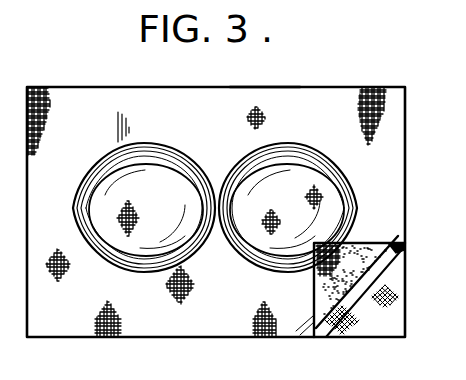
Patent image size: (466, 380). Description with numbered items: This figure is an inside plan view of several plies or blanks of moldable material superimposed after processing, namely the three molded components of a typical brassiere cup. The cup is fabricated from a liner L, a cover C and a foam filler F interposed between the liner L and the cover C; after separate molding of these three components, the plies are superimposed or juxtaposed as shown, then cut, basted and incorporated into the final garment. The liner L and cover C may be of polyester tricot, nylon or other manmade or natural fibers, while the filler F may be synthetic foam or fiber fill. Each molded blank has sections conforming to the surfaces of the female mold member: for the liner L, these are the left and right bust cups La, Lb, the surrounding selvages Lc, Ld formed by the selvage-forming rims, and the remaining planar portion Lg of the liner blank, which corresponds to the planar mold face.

The liner L is at (343, 98).
The planar portion Lg is at (263, 90).
The bust cup La is at (150, 185).
The bust cup Lb is at (288, 178).
The selvage Lc is at (106, 168).
The selvage Ld is at (335, 161).
The foam filler F is at (396, 264).
The cover C is at (396, 288).